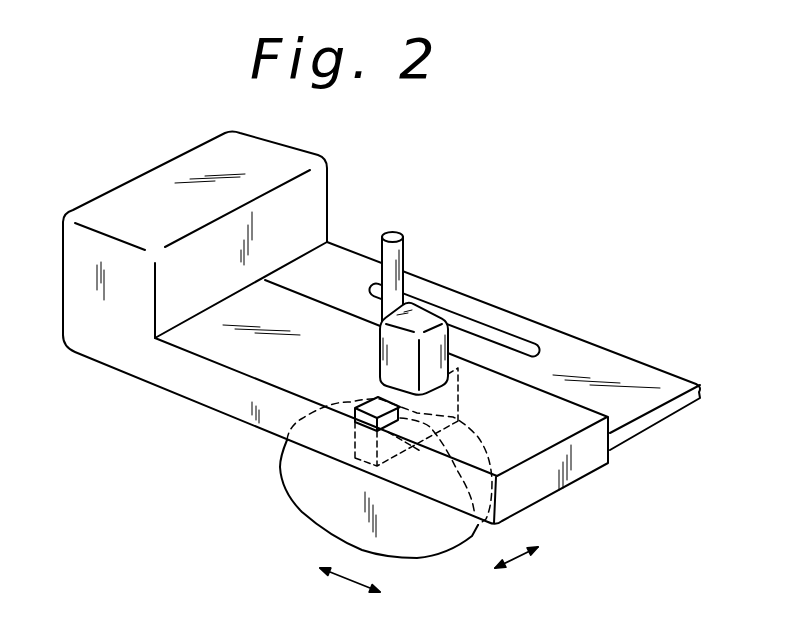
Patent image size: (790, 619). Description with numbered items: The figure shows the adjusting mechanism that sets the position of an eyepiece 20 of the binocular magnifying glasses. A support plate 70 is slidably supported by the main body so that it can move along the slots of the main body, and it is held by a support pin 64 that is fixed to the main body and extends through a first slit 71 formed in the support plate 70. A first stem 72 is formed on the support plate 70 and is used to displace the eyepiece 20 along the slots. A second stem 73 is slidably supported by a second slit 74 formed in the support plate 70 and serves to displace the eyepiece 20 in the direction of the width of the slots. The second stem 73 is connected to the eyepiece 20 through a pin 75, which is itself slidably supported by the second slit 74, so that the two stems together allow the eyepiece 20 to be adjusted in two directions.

The eyepiece 20 is at (347, 517).
The support pin 64 is at (398, 235).
The support plate 70 is at (187, 400).
The first slit 71 is at (510, 342).
The first stem 72 is at (170, 197).
The second stem 73 is at (422, 320).
The second slit 74 is at (385, 399).
The pin 75 is at (455, 417).